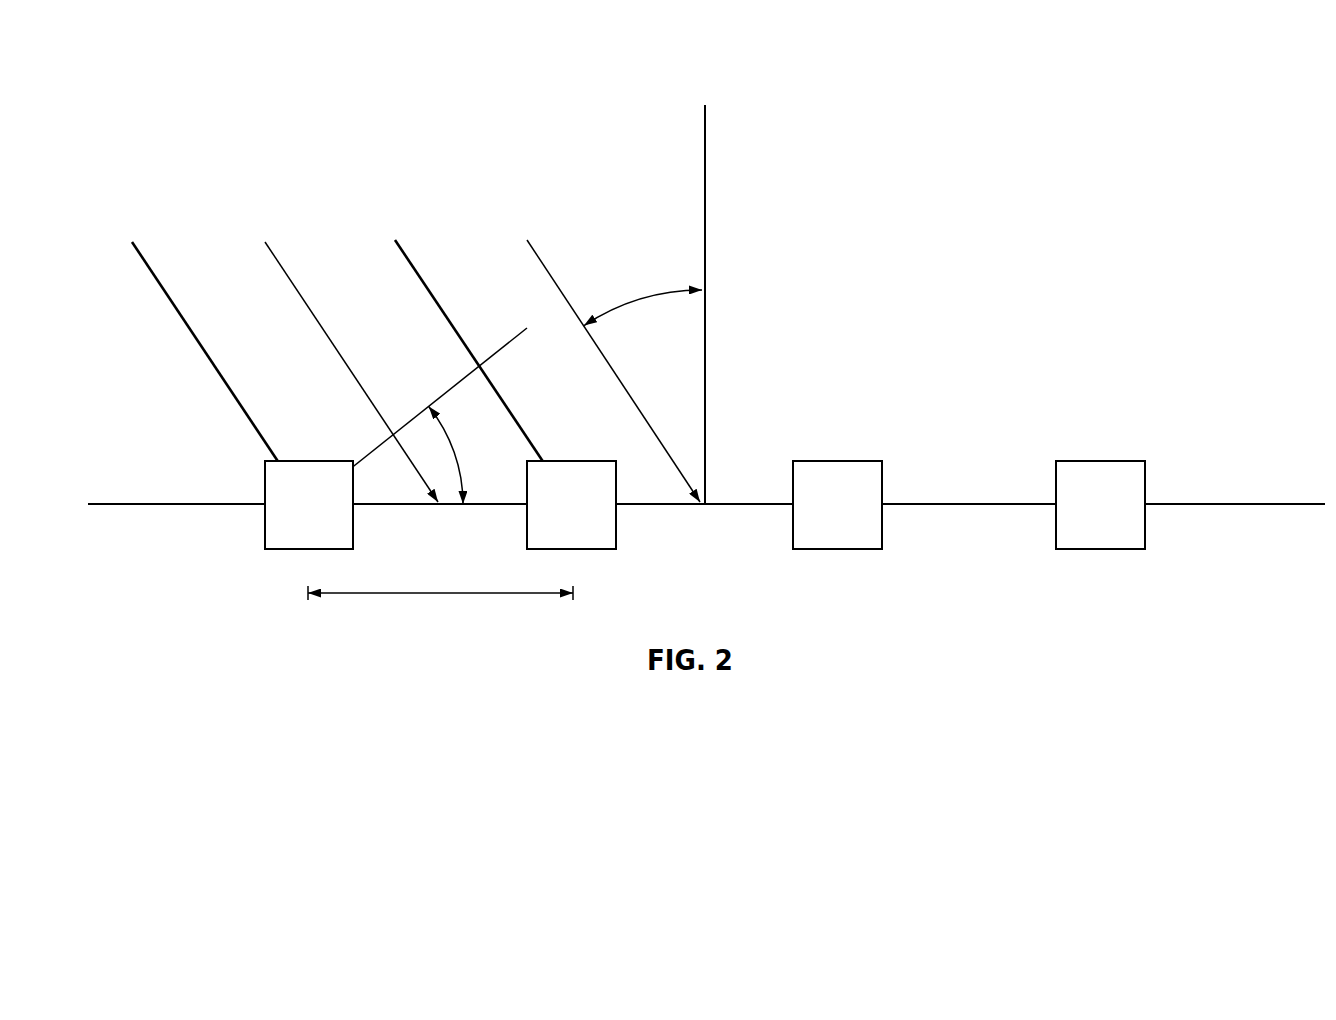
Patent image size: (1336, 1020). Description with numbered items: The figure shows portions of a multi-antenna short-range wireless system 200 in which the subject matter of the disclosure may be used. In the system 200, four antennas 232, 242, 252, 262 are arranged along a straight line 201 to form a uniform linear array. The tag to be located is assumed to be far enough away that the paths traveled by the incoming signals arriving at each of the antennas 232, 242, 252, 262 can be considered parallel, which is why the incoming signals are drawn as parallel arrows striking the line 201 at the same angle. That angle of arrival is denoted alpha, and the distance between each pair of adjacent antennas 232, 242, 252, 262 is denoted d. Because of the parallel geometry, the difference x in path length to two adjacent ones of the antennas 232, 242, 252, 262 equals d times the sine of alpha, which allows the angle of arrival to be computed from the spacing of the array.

The multi-antenna short-range wireless system 200 is at (181, 116).
The straight line 201 is at (1284, 505).
The antenna 232 is at (310, 551).
The antenna 242 is at (572, 551).
The antenna 252 is at (836, 551).
The antenna 262 is at (1099, 551).